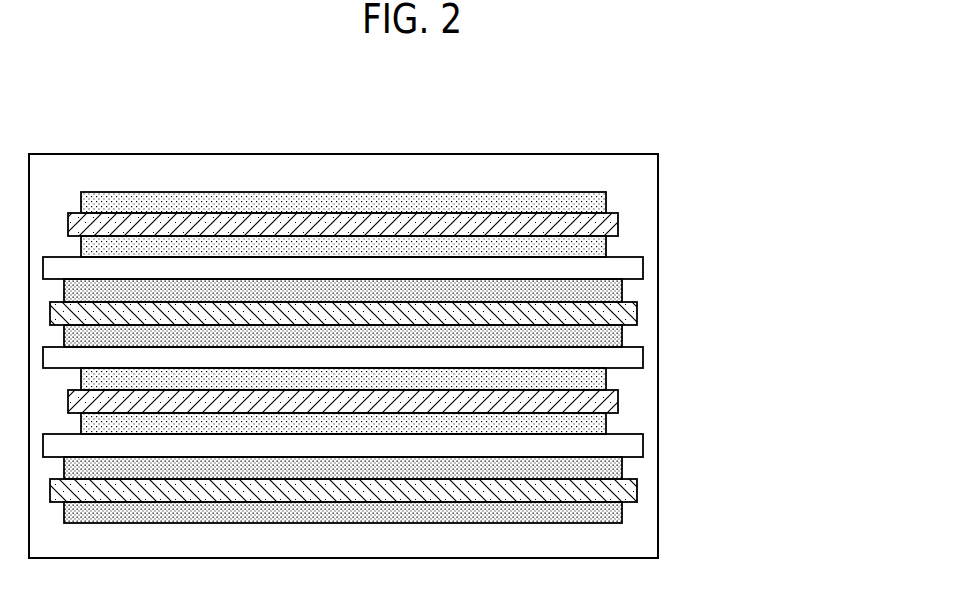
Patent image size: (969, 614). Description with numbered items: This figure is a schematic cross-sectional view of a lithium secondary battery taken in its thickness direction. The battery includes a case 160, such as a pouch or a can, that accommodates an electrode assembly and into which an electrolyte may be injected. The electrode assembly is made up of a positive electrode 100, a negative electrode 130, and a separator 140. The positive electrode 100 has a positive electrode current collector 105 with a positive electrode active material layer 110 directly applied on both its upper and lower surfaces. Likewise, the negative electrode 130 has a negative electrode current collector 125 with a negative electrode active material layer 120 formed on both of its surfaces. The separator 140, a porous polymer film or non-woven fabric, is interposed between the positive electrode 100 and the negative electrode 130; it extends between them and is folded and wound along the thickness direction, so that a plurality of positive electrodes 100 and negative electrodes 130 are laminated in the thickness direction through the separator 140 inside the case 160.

The positive electrode 100 is at (430, 312).
The positive electrode current collector 105 is at (619, 222).
The positive electrode active material layer 110 is at (607, 198).
The negative electrode active material layer 120 is at (623, 292).
The negative electrode current collector 125 is at (638, 308).
The negative electrode 130 is at (421, 401).
The separator 140 is at (527, 265).
The case 160 is at (658, 488).